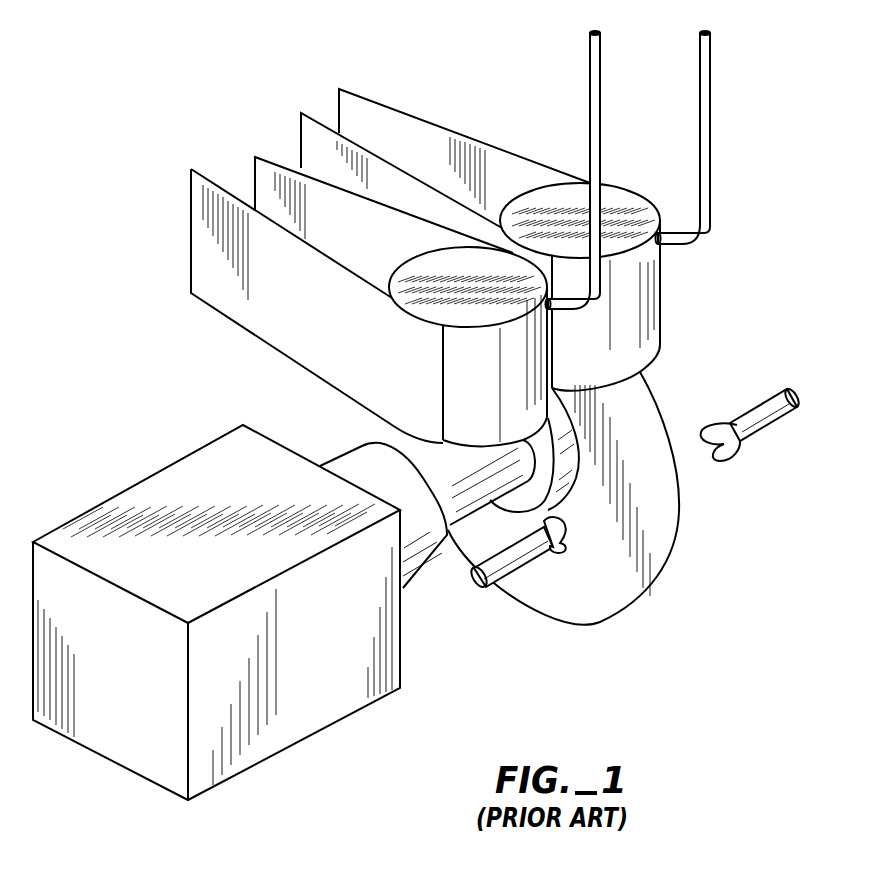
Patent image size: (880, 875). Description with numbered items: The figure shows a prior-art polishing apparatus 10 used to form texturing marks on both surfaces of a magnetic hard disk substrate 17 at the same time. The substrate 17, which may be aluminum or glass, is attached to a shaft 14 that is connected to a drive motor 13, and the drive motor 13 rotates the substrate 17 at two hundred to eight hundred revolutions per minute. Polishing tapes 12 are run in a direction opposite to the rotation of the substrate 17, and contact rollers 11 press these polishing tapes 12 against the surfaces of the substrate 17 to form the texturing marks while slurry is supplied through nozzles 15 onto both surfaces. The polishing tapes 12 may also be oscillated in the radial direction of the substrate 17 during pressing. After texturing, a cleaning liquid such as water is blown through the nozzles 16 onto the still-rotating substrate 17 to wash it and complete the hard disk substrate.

The apparatus 10 is at (156, 44).
The contact rollers 11 is at (405, 256).
The polishing tapes 12 is at (403, 123).
The drive motor 13 is at (177, 473).
The shaft 14 is at (403, 448).
The nozzles 15 is at (590, 45).
The nozzles 16 is at (503, 568).
The substrate 17 is at (668, 538).